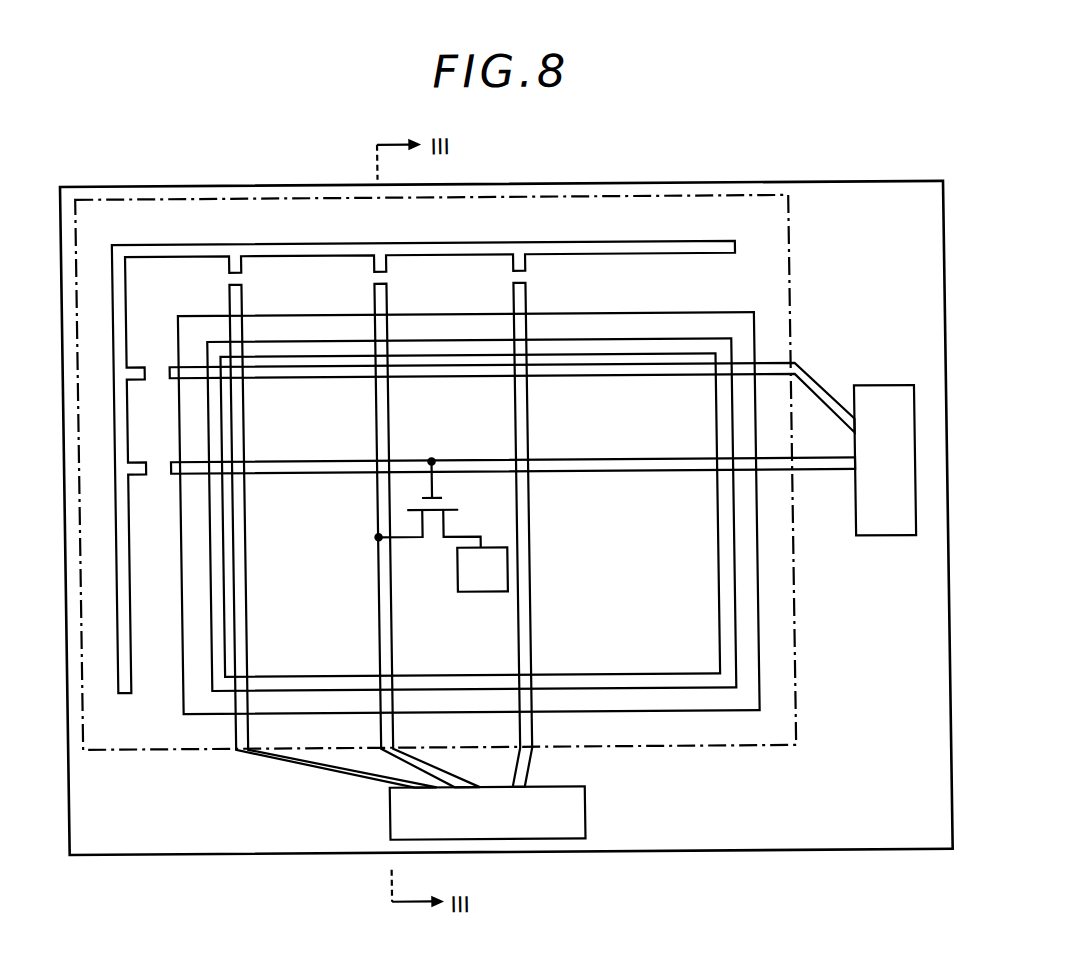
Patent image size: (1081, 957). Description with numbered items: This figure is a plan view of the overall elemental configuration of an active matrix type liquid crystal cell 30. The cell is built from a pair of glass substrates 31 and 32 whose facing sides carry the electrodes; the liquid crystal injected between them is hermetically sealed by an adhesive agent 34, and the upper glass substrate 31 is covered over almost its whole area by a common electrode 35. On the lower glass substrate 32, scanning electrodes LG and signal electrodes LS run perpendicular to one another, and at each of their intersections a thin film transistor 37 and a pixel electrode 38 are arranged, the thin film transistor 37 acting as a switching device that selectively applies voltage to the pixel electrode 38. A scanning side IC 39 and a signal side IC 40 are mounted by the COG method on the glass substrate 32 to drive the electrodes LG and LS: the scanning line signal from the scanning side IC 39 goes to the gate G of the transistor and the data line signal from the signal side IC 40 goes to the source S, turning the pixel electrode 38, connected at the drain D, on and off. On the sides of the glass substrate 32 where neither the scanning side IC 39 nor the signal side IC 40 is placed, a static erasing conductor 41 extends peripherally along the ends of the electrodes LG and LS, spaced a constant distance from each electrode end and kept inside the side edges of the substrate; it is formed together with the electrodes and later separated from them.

The liquid crystal cell 30 is at (962, 177).
The glass substrate 31 is at (742, 214).
The glass substrate 32 is at (931, 281).
The adhesive agent 34 is at (743, 335).
The common electrode 35 is at (696, 617).
The thin film transistor 37 is at (489, 502).
The pixel electrode 38 is at (482, 566).
The scanning side IC 39 is at (911, 438).
The signal side IC 40 is at (576, 819).
The static erasing conductor 41 is at (667, 249).
The scanning electrodes LG is at (340, 378).
The signal electrodes LS is at (514, 440).
The gate G is at (422, 480).
The source S is at (399, 525).
The drain D is at (462, 528).